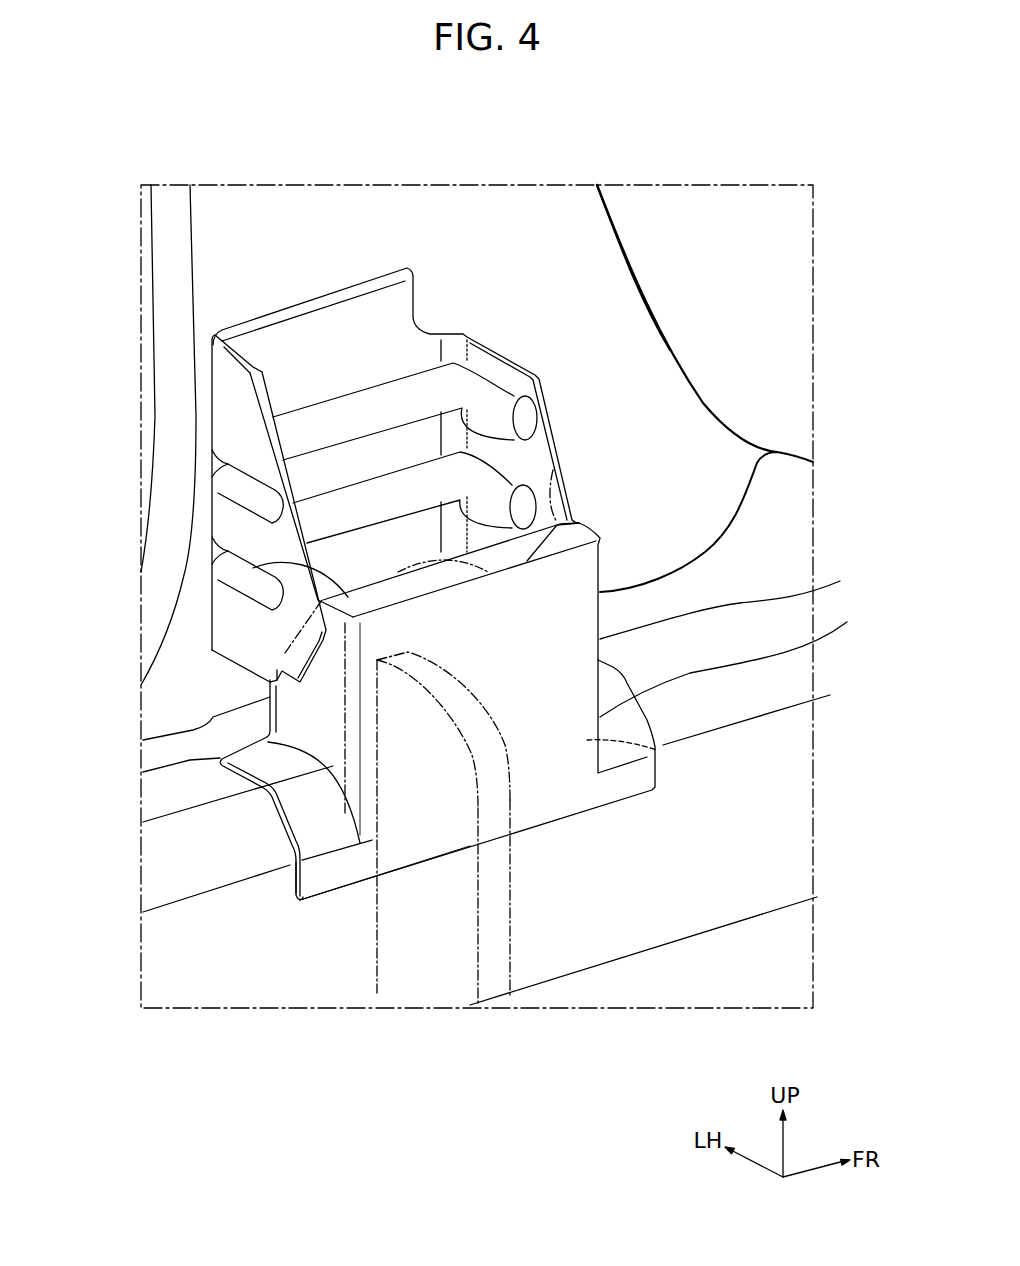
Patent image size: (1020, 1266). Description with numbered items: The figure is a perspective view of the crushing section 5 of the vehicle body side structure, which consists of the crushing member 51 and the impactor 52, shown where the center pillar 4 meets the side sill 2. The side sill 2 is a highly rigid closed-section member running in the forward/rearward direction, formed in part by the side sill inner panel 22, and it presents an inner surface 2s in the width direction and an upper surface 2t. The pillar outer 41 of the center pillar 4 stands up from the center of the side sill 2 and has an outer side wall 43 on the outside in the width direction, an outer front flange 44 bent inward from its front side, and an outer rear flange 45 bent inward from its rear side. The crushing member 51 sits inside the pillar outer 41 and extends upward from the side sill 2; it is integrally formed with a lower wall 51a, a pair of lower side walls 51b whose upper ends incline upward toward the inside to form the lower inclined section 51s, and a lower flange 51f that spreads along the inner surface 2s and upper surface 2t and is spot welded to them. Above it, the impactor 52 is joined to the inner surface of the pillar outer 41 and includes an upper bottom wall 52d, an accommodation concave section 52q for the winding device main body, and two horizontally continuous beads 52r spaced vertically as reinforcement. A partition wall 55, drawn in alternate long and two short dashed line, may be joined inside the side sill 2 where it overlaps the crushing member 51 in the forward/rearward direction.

The side sill 2 is at (762, 600).
The inner surface of the side sill 2s is at (548, 937).
The upper surface of the side sill 2t is at (177, 787).
The center pillar 4 is at (647, 260).
The crushing section 5 is at (608, 518).
The side sill inner panel 22 is at (763, 733).
The pillar outer 41 is at (293, 243).
The outer side wall 43 is at (528, 247).
The outer front flange 44 is at (645, 303).
The outer rear flange 45 is at (176, 439).
The crushing member 51 is at (600, 625).
The lower wall 51a is at (657, 750).
The lower side walls 51b is at (623, 670).
The lower flange 51f is at (343, 870).
The lower inclined section 51s is at (553, 470).
The impactor 52 is at (547, 404).
The upper bottom wall 52d is at (253, 568).
The accommodation concave section 52q is at (424, 462).
The beads 52r is at (373, 497).
The partition wall 55 is at (511, 797).